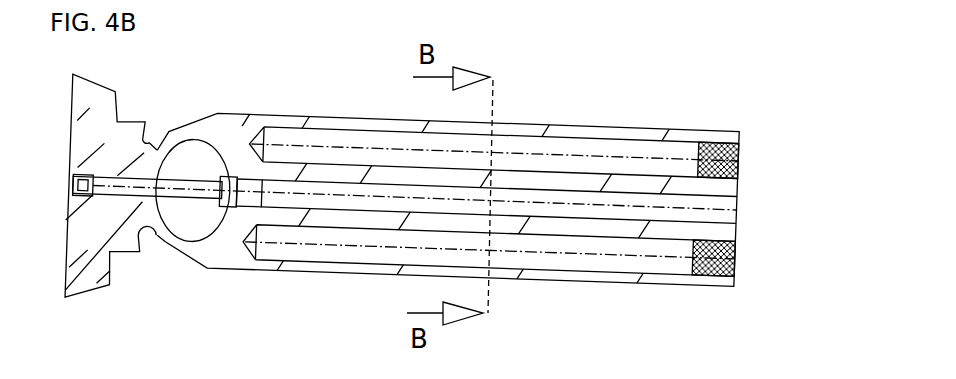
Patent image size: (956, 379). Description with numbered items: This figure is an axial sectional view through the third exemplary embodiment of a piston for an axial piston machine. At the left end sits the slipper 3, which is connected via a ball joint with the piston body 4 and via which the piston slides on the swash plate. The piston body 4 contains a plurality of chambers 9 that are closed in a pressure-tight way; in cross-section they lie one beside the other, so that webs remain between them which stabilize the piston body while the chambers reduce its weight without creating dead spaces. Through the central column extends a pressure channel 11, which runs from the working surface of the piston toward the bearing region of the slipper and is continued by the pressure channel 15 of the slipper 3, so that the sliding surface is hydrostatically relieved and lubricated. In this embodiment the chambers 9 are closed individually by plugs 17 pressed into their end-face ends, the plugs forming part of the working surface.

The slipper 3 is at (90, 270).
The piston body 4 is at (309, 299).
The chambers 9 is at (540, 147).
The pressure channel 11 is at (647, 207).
The pressure channel of the slipper 15 is at (152, 185).
The plugs 17 is at (738, 173).